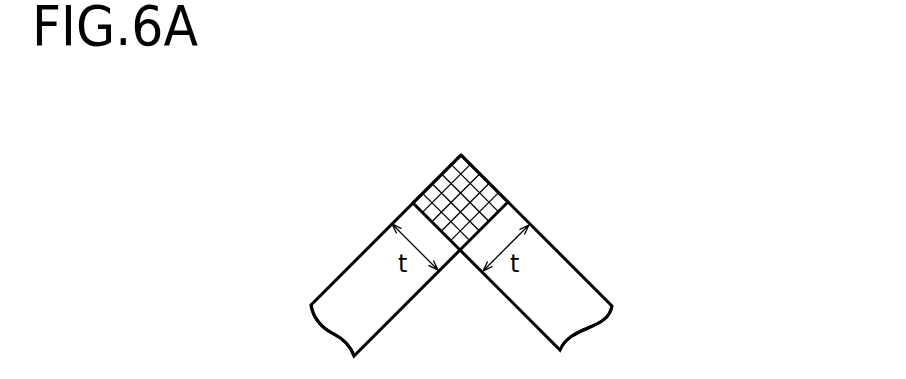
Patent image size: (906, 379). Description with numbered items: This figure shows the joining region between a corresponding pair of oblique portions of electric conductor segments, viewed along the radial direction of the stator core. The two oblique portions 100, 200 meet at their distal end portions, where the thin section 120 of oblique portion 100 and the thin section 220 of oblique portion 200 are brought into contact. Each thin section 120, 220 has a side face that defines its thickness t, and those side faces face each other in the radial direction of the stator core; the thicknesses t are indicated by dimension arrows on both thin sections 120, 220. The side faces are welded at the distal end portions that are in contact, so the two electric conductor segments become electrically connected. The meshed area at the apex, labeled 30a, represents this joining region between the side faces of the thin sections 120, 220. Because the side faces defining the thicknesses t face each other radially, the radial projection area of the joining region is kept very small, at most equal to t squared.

The oblique portion 100 is at (387, 174).
The thin section 120 is at (357, 268).
The oblique portion 200 is at (585, 188).
The thin section 220 is at (562, 272).
The joint portion 30a is at (440, 128).